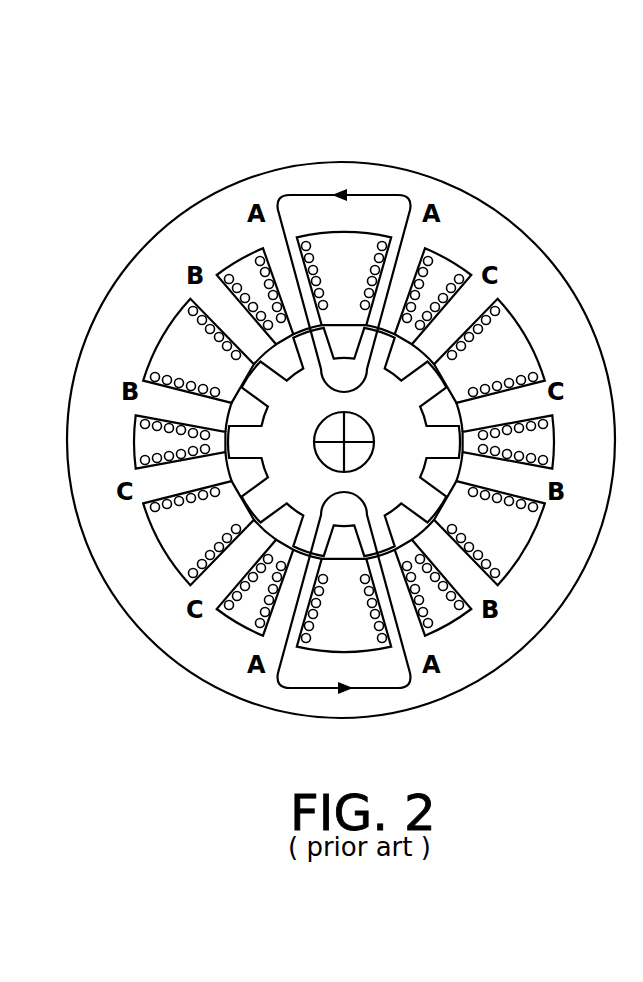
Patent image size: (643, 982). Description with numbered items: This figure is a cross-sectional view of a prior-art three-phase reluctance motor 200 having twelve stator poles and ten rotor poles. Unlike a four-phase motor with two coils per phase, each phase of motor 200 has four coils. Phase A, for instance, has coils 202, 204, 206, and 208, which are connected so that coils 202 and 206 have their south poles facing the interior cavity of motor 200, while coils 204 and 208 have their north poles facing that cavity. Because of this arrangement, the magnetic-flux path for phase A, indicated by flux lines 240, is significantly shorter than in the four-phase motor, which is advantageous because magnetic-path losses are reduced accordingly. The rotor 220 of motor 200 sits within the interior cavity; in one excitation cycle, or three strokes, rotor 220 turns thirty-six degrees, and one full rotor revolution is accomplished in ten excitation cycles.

The reluctance motor 200 is at (555, 84).
The coil 202 is at (312, 636).
The coil 204 is at (376, 606).
The coil 206 is at (377, 246).
The coil 208 is at (346, 288).
The rotor 220 is at (235, 509).
The flux lines 240 is at (306, 195).